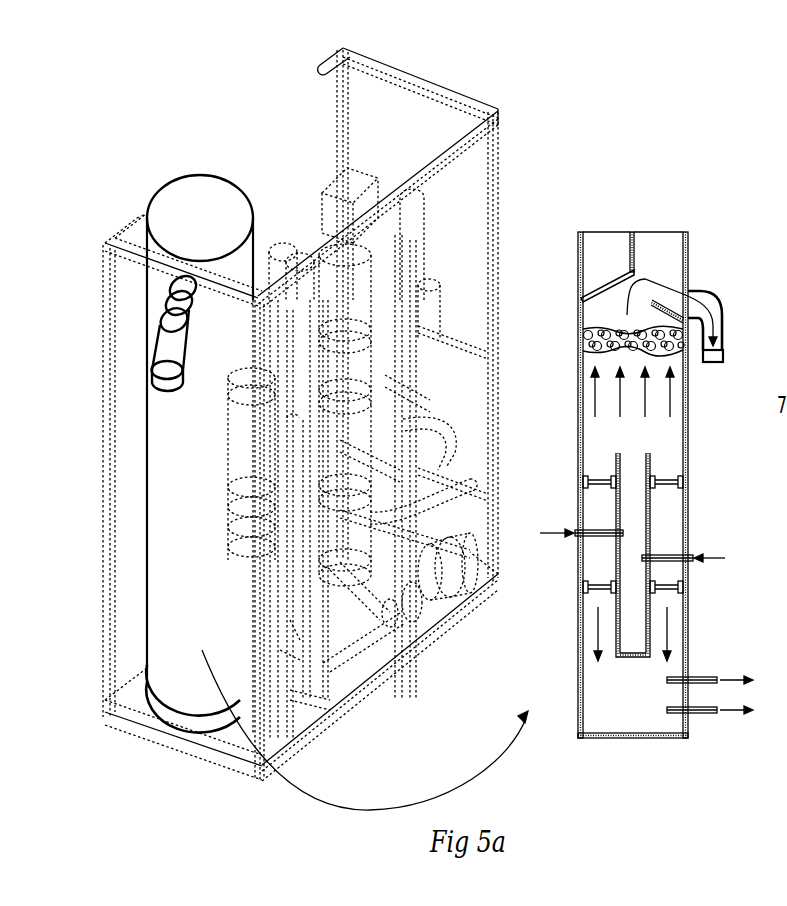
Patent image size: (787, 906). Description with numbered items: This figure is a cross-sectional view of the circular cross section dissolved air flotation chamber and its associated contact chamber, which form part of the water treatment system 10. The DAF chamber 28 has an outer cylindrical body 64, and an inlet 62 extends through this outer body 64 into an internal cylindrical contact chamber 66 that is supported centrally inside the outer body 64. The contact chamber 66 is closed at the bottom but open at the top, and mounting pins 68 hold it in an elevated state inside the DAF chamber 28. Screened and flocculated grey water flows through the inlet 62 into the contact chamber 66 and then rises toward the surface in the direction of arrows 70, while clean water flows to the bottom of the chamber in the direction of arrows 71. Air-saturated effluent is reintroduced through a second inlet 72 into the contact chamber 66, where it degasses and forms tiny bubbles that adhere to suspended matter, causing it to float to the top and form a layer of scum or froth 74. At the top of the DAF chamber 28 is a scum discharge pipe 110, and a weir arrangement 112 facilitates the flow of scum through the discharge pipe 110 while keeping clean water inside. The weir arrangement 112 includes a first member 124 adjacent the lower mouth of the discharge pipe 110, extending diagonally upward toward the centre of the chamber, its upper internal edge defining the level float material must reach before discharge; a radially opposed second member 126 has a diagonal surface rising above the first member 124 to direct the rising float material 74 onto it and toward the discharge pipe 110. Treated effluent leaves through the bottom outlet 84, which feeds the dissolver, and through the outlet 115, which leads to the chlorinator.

The system 10 is at (290, 167).
The DAF chamber 28 is at (158, 548).
The outer cylindrical body 64 is at (690, 456).
The weir arrangement 112 is at (614, 274).
The first member 124 is at (673, 311).
The scum discharge pipe 110 is at (726, 312).
The second member 126 is at (578, 330).
The scum or froth 74 is at (579, 352).
The arrows 70 is at (672, 416).
The contact chamber 66 is at (652, 541).
The mounting pins 68 is at (673, 485).
The inlet 62 is at (588, 537).
The second inlet 72 is at (675, 564).
The arrows 71 is at (588, 650).
The bottom outlet 84 is at (700, 678).
The outlet 115 is at (695, 714).